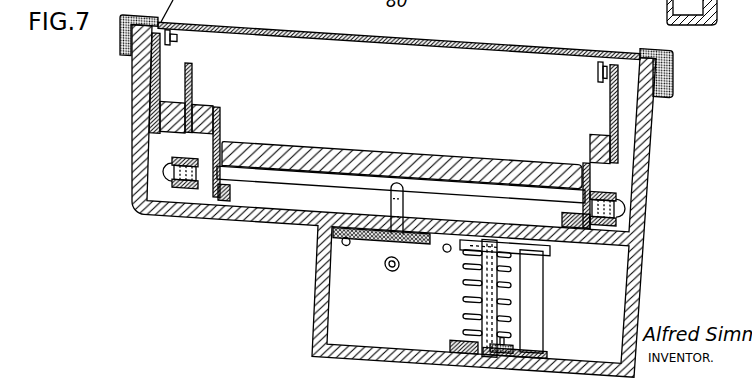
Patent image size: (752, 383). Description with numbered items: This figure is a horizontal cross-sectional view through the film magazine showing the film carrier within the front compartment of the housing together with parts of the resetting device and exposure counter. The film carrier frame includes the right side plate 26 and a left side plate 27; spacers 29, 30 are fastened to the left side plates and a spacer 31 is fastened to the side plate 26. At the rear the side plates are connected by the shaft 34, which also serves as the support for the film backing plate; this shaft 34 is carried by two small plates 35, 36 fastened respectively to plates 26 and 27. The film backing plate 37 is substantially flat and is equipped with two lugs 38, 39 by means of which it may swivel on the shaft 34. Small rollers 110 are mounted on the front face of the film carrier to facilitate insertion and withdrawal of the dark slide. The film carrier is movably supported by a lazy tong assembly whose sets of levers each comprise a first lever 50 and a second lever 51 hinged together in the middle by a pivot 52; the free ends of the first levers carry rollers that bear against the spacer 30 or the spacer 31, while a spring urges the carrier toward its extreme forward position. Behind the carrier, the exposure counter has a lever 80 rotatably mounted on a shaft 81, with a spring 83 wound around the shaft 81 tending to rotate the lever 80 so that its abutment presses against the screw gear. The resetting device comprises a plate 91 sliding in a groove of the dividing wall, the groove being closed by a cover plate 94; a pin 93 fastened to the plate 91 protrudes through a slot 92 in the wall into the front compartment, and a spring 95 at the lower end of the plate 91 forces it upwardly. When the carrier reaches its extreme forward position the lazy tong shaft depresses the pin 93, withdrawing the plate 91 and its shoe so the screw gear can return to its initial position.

The right side plate 26 is at (618, 77).
The left side plate 27 is at (194, 67).
The spacer 29 is at (170, 102).
The spacer 30 is at (205, 105).
The spacer 31 is at (600, 130).
The shaft 34 is at (290, 183).
The small plate 35 is at (219, 110).
The small plate 36 is at (588, 143).
The film backing plate 37 is at (282, 150).
The lug 38 is at (228, 200).
The lug 39 is at (568, 218).
The first lever 50 is at (190, 188).
The second lever 51 is at (172, 182).
The pivot 52 is at (180, 185).
The lever 80 is at (453, 342).
The shaft 81 is at (482, 308).
The spring 83 is at (463, 300).
The plate 91 is at (358, 244).
The slot 92 is at (386, 212).
The pin 93 is at (397, 181).
The cover plate 94 is at (415, 244).
The spring 95 is at (390, 272).
The small rollers 110 is at (177, 38).